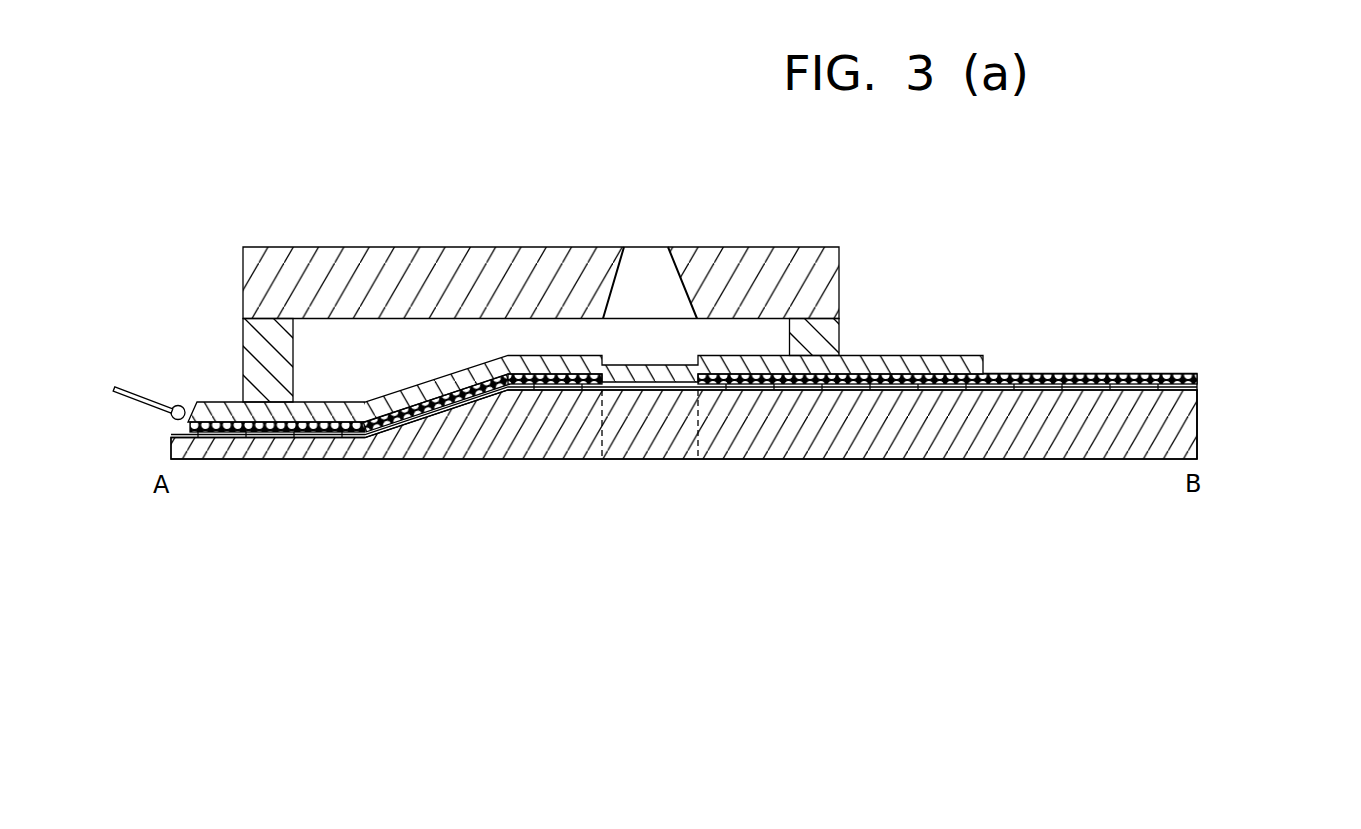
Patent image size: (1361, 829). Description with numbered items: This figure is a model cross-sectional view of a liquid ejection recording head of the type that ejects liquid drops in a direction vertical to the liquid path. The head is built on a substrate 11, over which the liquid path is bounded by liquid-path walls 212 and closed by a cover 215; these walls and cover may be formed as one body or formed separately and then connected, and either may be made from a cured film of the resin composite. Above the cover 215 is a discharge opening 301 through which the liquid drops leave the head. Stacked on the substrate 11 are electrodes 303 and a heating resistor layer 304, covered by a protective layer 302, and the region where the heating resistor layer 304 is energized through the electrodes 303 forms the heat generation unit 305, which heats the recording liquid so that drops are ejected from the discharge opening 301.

The substrate 11 is at (1280, 337).
The liquid-path walls 212 is at (831, 333).
The cover 215 is at (786, 262).
The discharge openings 301 is at (641, 262).
The protective layer 302 is at (946, 360).
The electrodes 303 is at (1128, 372).
The heating resistor layer 304 is at (1197, 386).
The heat generation unit 305 is at (647, 388).